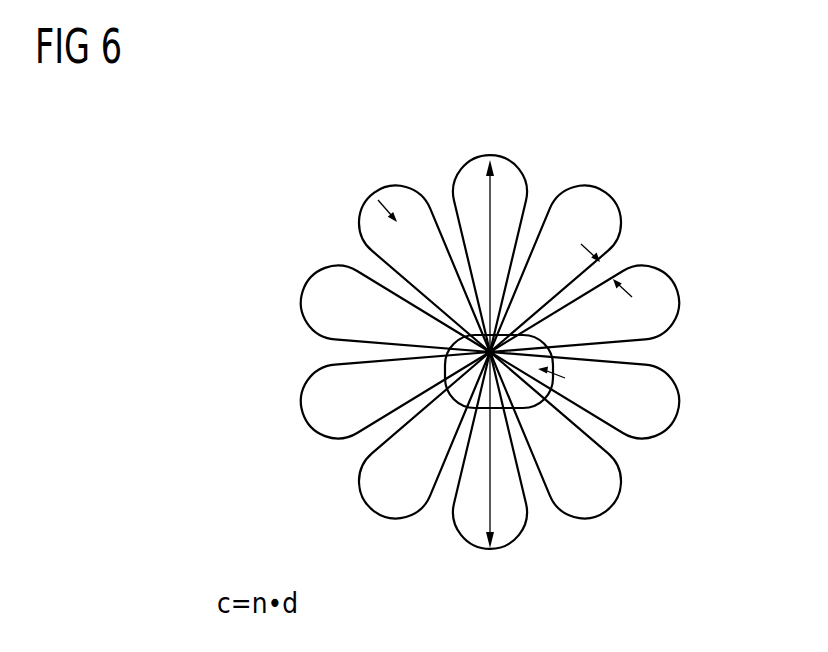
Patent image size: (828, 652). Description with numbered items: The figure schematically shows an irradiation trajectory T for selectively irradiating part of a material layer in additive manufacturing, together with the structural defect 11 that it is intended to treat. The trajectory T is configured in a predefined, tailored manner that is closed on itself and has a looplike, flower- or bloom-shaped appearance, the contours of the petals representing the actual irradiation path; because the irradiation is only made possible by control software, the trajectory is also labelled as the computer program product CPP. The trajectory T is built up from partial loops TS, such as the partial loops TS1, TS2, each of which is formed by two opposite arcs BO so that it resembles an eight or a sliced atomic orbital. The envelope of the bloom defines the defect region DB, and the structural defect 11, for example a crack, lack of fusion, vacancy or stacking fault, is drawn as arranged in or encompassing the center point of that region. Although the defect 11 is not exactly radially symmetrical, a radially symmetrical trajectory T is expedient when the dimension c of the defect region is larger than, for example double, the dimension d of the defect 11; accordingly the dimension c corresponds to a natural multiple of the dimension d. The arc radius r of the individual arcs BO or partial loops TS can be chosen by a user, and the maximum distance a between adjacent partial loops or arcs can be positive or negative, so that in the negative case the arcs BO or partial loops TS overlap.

The computer program product CPP is at (396, 378).
The irradiation trajectory T is at (212, 236).
The partial loop TS is at (364, 214).
The partial loop TS1 is at (522, 542).
The partial loop TS2 is at (608, 517).
The defect region DB is at (621, 208).
The arc BO is at (303, 303).
The structural defect 11 is at (533, 405).
The dimension of the defect region c is at (494, 184).
The dimension of the defect d is at (560, 375).
The arc radius r is at (400, 193).
The distance between adjacent partial loops a is at (631, 292).